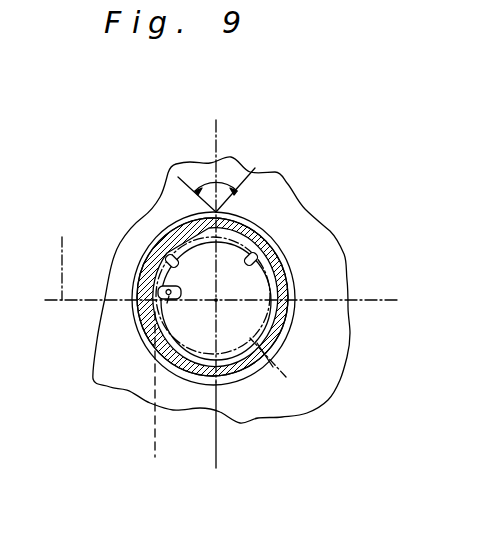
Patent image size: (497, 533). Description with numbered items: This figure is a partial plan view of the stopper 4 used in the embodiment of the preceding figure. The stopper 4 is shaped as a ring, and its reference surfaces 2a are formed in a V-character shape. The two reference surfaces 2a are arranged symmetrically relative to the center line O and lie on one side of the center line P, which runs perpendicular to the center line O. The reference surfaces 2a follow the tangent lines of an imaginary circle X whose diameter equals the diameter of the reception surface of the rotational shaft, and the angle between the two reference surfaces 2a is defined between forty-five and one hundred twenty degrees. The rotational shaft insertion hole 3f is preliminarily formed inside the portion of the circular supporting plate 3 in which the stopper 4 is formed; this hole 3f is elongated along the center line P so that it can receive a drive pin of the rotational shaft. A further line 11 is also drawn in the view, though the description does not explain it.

The reference surfaces 2a is at (170, 256).
The circular supporting plate 3 is at (313, 240).
The rotational shaft insertion hole 3f is at (138, 330).
The stopper 4 is at (298, 308).
The reference line 11 is at (166, 482).
The center line O is at (216, 136).
The center line P is at (61, 255).
The imaginary circle X is at (286, 377).